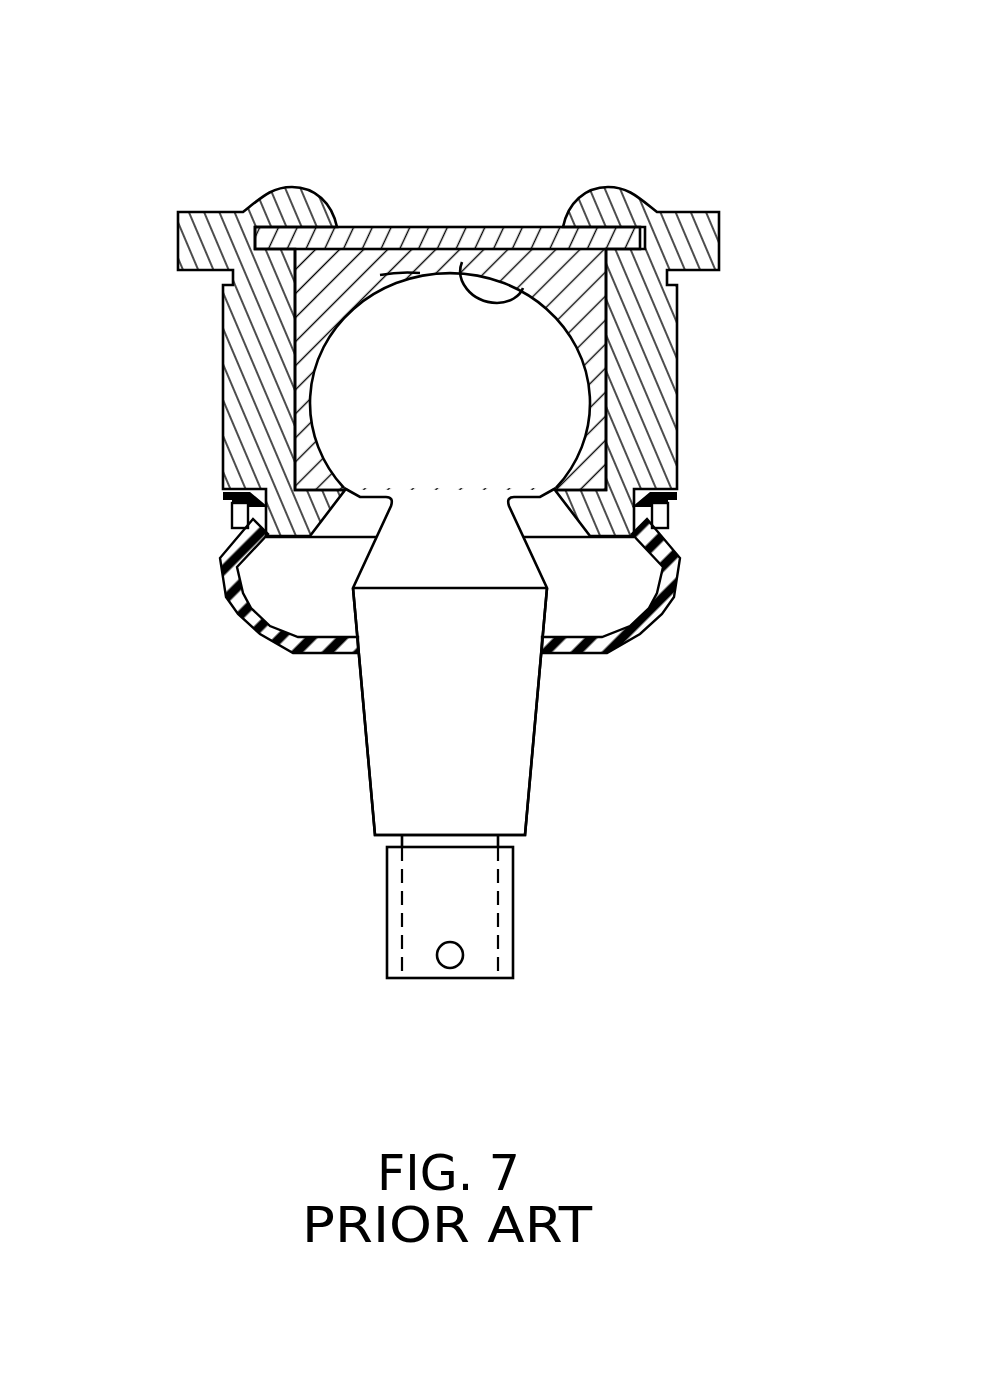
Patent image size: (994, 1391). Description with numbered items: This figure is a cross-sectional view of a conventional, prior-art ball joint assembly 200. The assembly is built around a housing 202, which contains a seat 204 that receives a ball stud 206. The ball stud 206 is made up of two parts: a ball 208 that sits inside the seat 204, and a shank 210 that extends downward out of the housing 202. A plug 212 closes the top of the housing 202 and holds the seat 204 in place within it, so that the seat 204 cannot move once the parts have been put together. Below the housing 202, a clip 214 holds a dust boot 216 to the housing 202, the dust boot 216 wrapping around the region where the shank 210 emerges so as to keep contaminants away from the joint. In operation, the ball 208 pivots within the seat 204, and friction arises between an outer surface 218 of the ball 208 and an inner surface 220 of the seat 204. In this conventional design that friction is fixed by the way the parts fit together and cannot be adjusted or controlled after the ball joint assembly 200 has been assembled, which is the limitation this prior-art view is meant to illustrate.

The ball joint assembly 200 is at (473, 112).
The housing 202 is at (208, 337).
The seat 204 is at (620, 353).
The ball stud 206 is at (543, 785).
The ball 208 is at (348, 392).
The shank 210 is at (397, 753).
The plug 212 is at (661, 236).
The clip 214 is at (214, 512).
The dust boot 216 is at (216, 593).
The outer surface 218 is at (398, 278).
The inner surface 220 is at (462, 262).